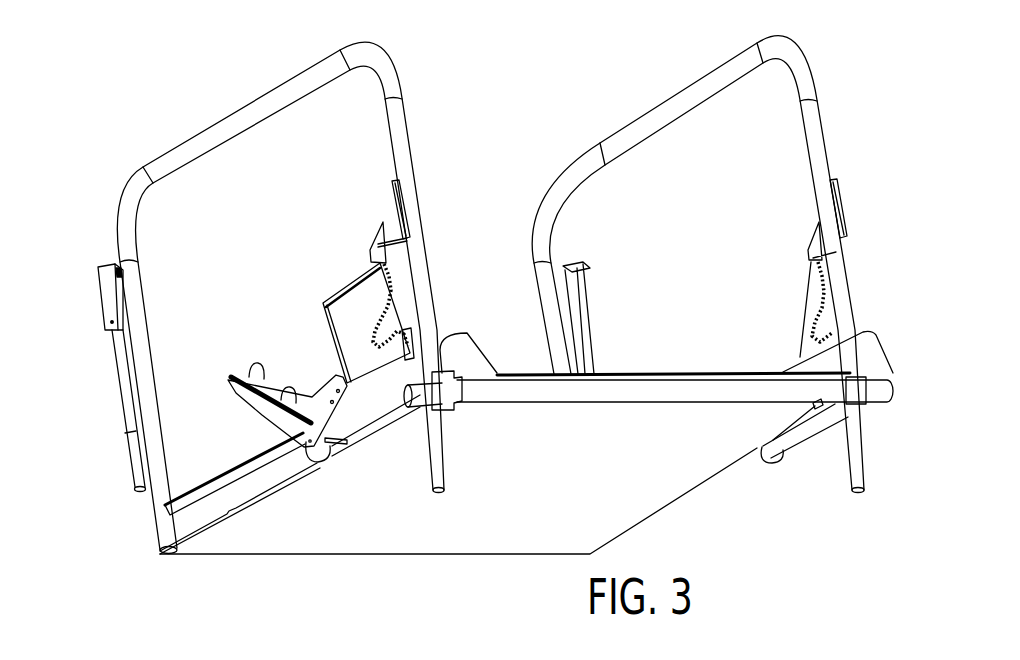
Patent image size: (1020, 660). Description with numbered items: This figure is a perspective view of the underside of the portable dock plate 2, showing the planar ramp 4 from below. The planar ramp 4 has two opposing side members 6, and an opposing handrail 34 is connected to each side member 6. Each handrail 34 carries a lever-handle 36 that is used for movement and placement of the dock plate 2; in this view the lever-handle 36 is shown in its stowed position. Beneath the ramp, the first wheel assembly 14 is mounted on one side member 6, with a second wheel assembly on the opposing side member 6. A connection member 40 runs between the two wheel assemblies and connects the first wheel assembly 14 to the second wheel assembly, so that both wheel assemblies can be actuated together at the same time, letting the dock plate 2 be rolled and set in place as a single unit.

The portable dock plate 2 is at (504, 514).
The planar ramp 4 is at (338, 507).
The side member 6 is at (200, 510).
The first wheel assembly 14 is at (277, 417).
The handrail 34 is at (137, 243).
The lever-handle 36 is at (125, 377).
The connection member 40 is at (748, 395).